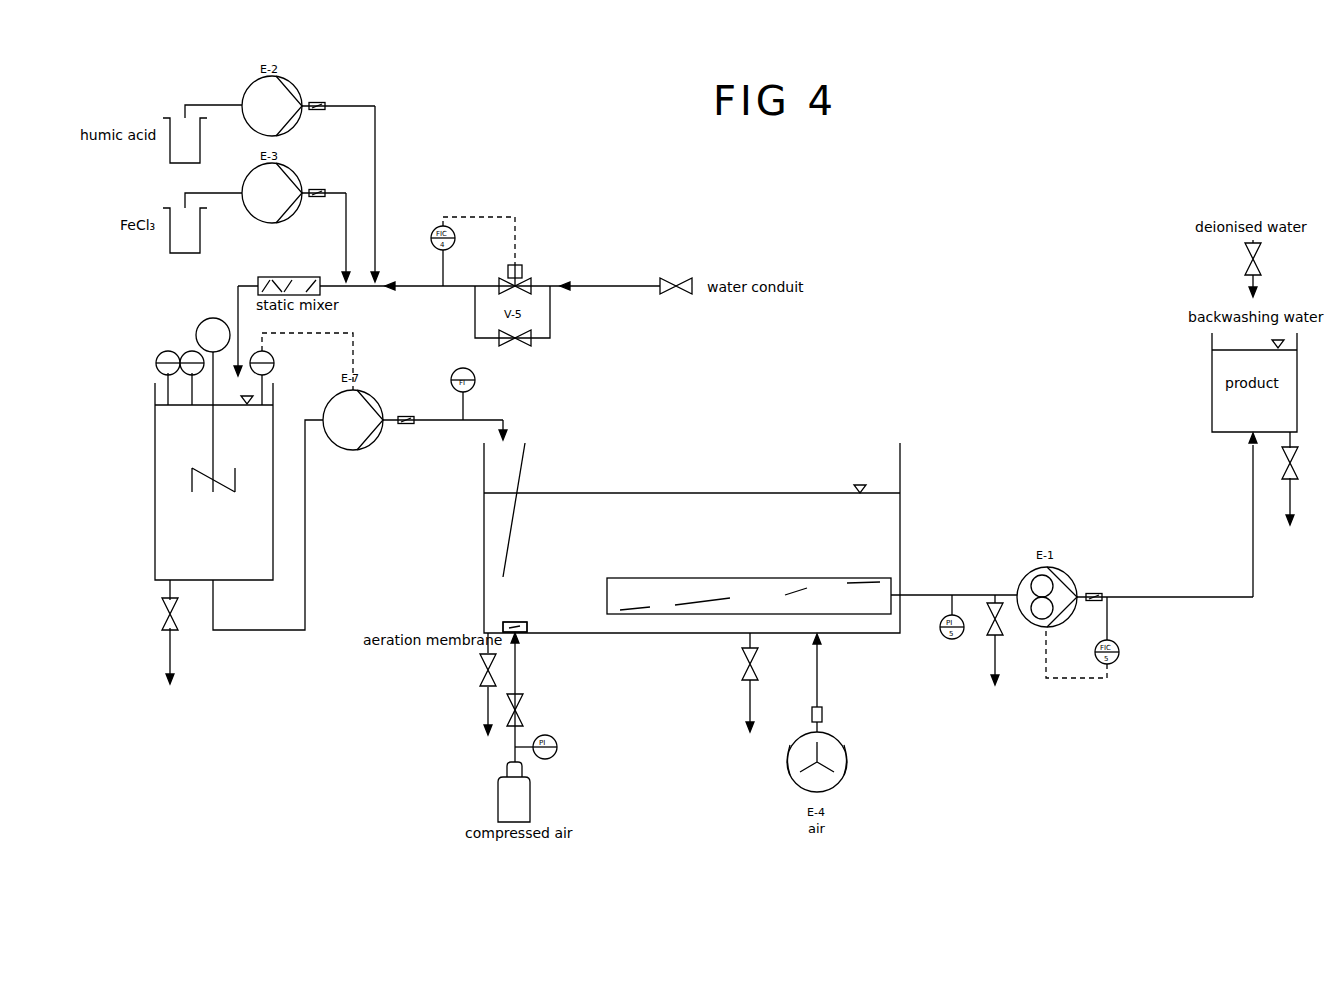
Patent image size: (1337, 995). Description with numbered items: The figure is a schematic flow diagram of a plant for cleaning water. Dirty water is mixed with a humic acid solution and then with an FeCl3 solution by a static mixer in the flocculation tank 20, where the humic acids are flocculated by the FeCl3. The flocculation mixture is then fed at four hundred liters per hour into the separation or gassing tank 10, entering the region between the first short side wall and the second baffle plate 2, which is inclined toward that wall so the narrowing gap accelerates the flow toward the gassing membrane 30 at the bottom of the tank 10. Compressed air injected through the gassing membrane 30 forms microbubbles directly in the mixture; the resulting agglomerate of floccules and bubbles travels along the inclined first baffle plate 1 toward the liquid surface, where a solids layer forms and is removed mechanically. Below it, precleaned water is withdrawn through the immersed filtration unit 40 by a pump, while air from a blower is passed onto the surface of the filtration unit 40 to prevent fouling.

The first baffle plate 1 is at (528, 628).
The second baffle plate 2 is at (527, 460).
The tank 10 is at (903, 463).
The flocculation tank 20 is at (168, 520).
The gassing membrane 30 is at (528, 633).
The filtration unit 40 is at (878, 613).